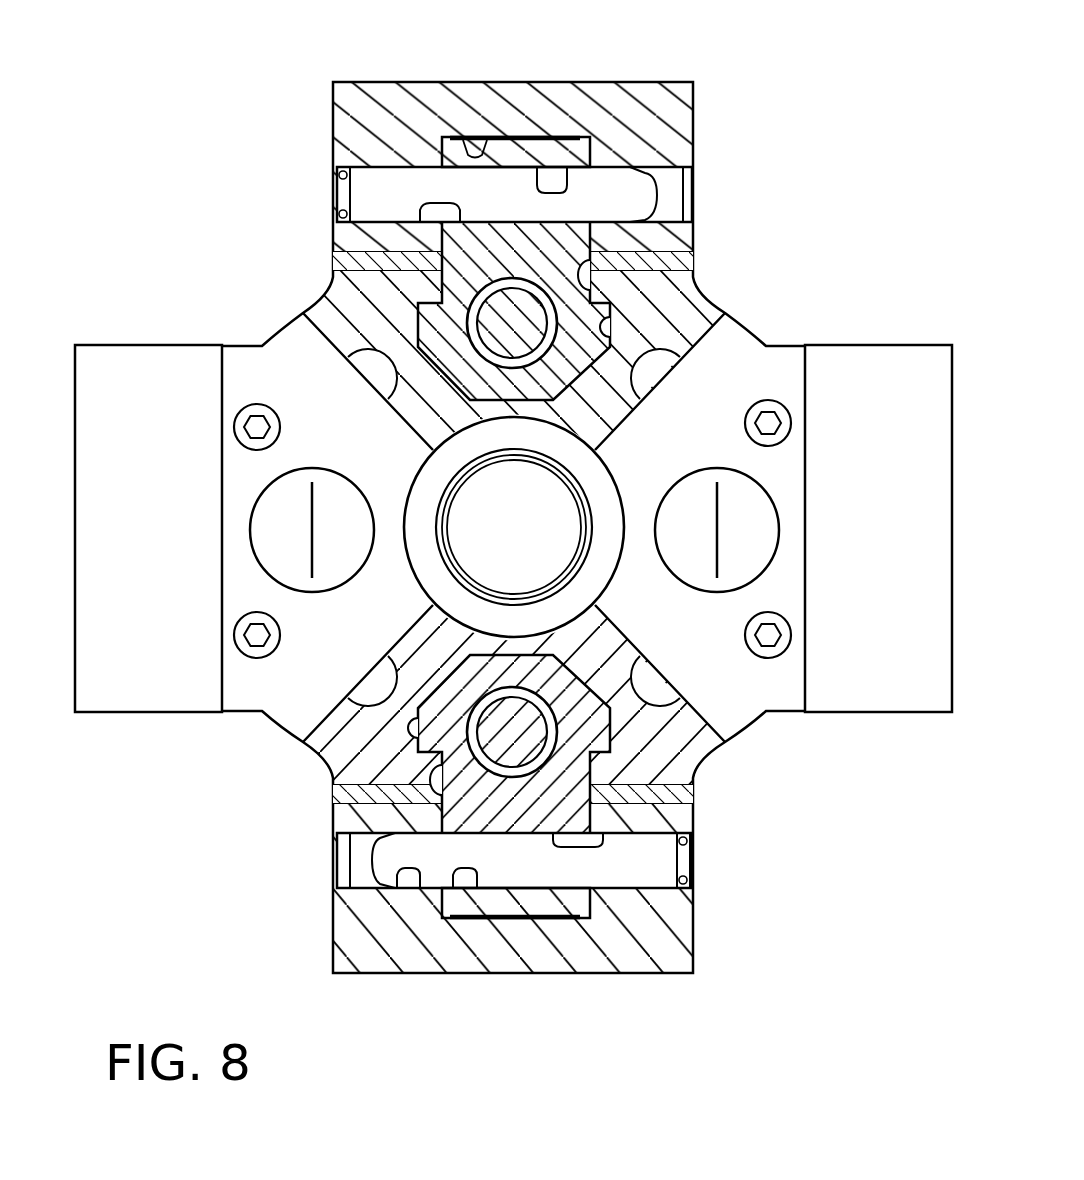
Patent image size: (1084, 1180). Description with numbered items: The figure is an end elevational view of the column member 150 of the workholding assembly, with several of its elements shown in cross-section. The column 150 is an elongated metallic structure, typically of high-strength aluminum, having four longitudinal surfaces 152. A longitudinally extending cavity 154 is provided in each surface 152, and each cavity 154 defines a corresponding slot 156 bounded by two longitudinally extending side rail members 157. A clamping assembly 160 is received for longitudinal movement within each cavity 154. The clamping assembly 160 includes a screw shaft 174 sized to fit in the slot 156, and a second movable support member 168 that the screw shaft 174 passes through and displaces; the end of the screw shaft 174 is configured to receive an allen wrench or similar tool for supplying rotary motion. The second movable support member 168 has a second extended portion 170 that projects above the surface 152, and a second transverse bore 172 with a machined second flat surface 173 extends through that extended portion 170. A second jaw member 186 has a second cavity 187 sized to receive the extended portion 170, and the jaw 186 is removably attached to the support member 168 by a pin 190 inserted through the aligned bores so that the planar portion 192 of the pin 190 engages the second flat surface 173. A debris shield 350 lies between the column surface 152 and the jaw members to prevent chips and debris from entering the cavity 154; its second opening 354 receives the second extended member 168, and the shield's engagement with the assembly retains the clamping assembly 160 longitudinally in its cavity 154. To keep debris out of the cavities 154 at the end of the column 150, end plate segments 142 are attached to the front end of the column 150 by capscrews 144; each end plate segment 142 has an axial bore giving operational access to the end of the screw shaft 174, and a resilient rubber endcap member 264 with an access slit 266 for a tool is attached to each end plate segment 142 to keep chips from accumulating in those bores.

The end plate segment 142 is at (375, 636).
The capscrews 144 is at (234, 427).
The column member 150 is at (710, 760).
The longitudinal surfaces 152 is at (350, 250).
The longitudinal cavity 154 is at (620, 332).
The slot 156 is at (600, 292).
The side rail members 157 is at (400, 252).
The clamping assembly 160 is at (537, 127).
The second movable support member 168 is at (570, 372).
The second extended portion 170 is at (503, 137).
The second transverse bore 172 is at (690, 180).
The second flat surface 173 is at (680, 117).
The screw shaft 174 is at (510, 345).
The second jaw member 186 is at (693, 125).
The second cavity 187 is at (500, 150).
The pin 190 is at (476, 209).
The planar portion 192 is at (612, 160).
The endcap member 264 is at (270, 553).
The access slit 266 is at (310, 525).
The debris shield 350 is at (693, 262).
The second opening 354 is at (327, 770).